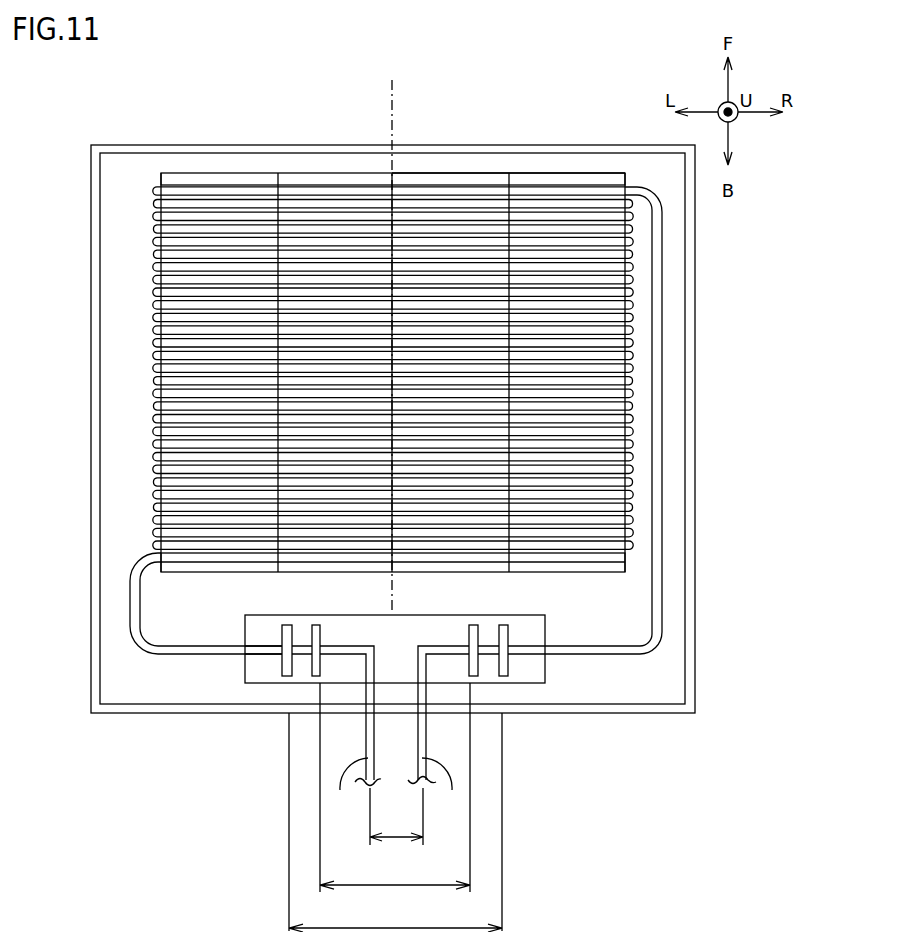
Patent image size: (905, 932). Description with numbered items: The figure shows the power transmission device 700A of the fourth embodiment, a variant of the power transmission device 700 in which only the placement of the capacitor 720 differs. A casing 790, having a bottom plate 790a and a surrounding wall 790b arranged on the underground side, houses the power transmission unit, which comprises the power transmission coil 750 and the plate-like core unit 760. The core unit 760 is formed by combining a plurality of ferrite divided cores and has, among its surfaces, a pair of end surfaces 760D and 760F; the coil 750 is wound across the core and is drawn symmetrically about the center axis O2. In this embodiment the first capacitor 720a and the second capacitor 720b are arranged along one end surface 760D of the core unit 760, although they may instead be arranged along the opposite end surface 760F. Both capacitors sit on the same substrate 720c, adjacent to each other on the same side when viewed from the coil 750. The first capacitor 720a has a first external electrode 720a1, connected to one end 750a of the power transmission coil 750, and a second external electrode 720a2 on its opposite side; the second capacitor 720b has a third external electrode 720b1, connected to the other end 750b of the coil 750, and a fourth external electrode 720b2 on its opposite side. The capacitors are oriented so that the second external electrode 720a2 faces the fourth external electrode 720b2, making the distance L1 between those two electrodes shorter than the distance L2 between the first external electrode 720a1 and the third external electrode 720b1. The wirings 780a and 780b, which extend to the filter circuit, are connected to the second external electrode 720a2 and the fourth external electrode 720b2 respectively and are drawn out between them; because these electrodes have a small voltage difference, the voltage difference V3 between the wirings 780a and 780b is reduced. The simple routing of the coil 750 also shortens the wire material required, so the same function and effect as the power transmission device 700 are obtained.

The power transmission device 700 is at (471, 334).
The power transmission device 700A is at (717, 758).
The end surface 760F is at (183, 173).
The end surface 760D is at (600, 575).
The core unit 760 is at (244, 180).
The power transmission coil 750 is at (222, 100).
The one end of power transmission coil 750a is at (657, 647).
The other end of power transmission coil 750b is at (135, 646).
The casing 790 is at (509, 119).
The bottom plate 790a is at (512, 102).
The surrounding wall 790b is at (538, 152).
The capacitor 720 is at (408, 686).
The first capacitor 720a is at (488, 680).
The first external electrode 720a1 is at (505, 665).
The second external electrode 720a2 is at (469, 637).
The second capacitor 720b is at (300, 680).
The third external electrode 720b1 is at (282, 665).
The fourth external electrode 720b2 is at (320, 637).
The substrate 720c is at (257, 670).
The wiring 780a is at (440, 732).
The wiring 780b is at (350, 732).
The center axis O2 is at (394, 90).
The voltage difference V3 is at (396, 816).
The distance L1 is at (395, 787).
The distance L2 is at (395, 822).